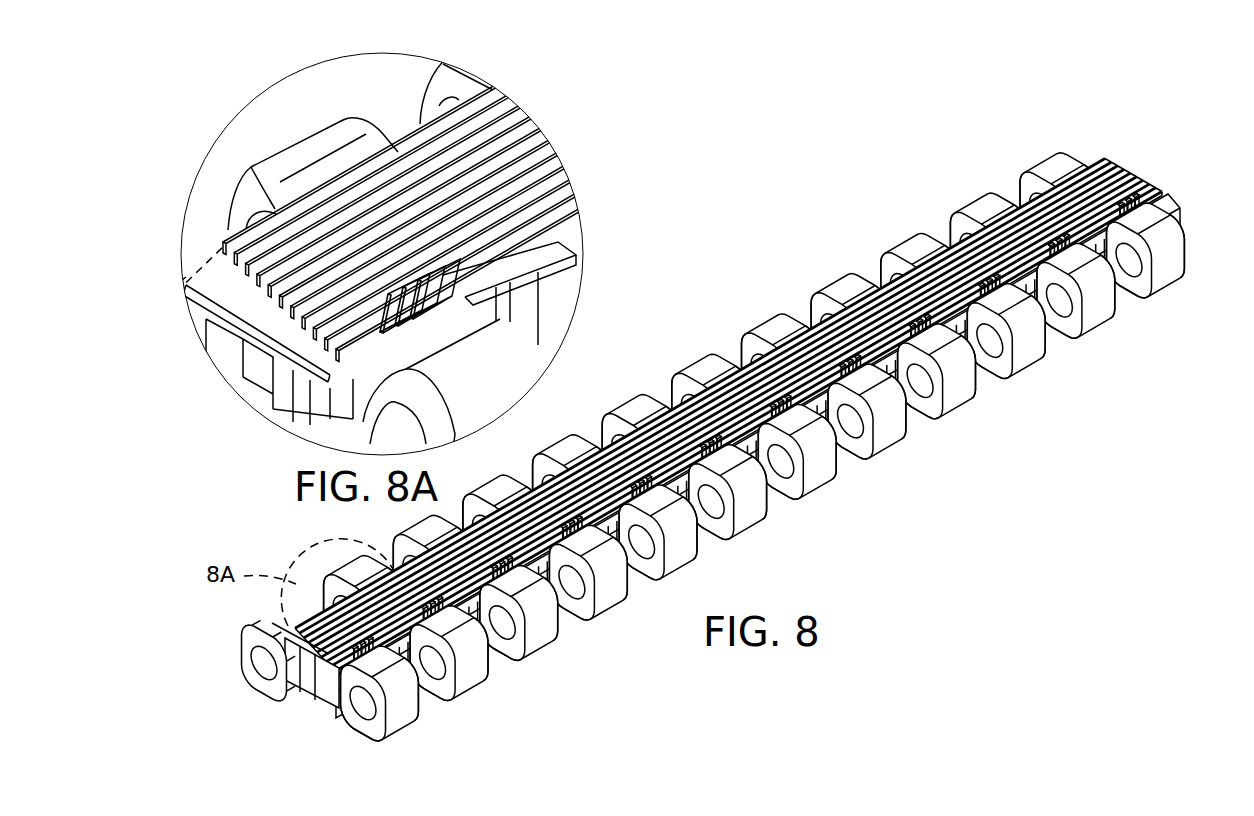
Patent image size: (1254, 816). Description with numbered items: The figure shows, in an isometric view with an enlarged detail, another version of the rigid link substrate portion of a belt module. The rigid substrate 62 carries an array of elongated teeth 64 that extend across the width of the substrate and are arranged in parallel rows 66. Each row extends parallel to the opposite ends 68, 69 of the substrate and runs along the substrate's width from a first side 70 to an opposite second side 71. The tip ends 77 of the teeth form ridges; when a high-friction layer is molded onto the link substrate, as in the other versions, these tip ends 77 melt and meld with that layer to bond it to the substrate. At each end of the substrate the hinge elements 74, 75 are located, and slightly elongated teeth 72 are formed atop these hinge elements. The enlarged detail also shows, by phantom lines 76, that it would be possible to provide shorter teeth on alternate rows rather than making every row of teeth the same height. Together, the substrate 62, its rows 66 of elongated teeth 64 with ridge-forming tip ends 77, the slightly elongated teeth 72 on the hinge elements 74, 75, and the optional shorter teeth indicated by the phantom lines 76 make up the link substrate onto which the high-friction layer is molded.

In FIG. 8, the rigid substrate 62 is at (1163, 203).
In FIG. 8, the elongated teeth 64 is at (1140, 190).
In FIG. 8A, the elongated teeth 64 is at (561, 202).
In FIG. 8A, the parallel rows 66 is at (177, 292).
In FIG. 8, the end of the substrate 68 is at (1036, 325).
In FIG. 8, the end of the substrate 69 is at (962, 236).
In FIG. 8, the first side 70 is at (310, 684).
In FIG. 8, the second side 71 is at (1122, 164).
In FIG. 8, the slightly elongated teeth 72 is at (588, 528).
In FIG. 8A, the slightly elongated teeth 72 is at (443, 318).
In FIG. 8, the hinge element 74 is at (750, 495).
In FIG. 8A, the hinge element 74 is at (483, 394).
In FIG. 8, the hinge element 75 is at (758, 343).
In FIG. 8A, the phantom lines 76 is at (241, 354).
In FIG. 8A, the tip ends 77 is at (410, 131).